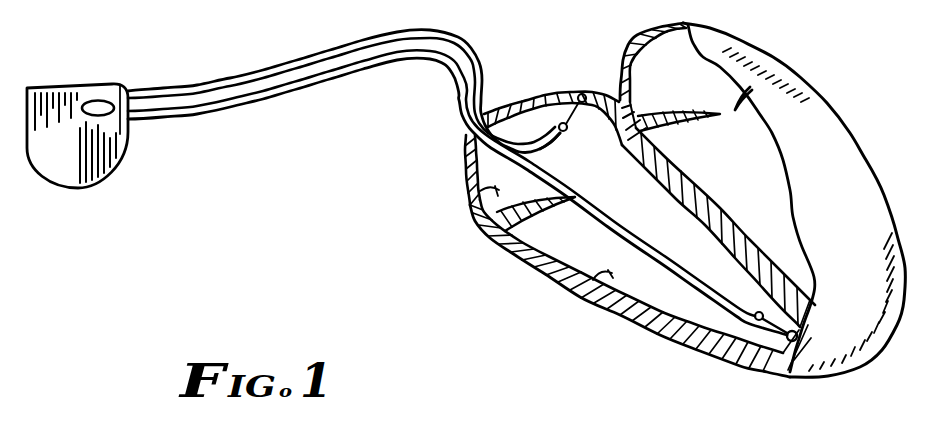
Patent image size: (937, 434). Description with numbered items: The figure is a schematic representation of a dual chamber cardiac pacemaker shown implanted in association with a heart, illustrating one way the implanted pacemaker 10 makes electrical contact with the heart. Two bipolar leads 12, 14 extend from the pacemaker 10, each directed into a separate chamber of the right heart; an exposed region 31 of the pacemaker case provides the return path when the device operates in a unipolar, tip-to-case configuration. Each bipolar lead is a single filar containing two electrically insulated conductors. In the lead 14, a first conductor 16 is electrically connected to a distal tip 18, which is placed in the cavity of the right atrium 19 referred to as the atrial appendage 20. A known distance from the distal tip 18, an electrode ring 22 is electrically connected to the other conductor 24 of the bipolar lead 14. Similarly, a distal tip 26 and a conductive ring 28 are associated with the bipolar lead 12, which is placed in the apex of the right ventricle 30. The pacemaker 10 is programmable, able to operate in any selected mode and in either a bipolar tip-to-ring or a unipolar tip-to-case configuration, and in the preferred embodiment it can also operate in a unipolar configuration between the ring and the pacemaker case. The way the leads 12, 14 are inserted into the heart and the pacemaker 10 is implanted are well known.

The pacemaker 10 is at (58, 173).
The exposed region 31 is at (103, 105).
The bipolar lead 12 is at (214, 105).
The bipolar lead 14 is at (238, 86).
The first conductor 16 is at (531, 100).
The distal tip 18 is at (578, 94).
The right atrium 19 is at (467, 194).
The atrial appendage 20 is at (588, 90).
The electrode ring 22 is at (568, 130).
The other conductor 24 is at (549, 141).
The distal tip 26 is at (790, 340).
The conductive ring 28 is at (746, 318).
The right ventricle 30 is at (573, 285).